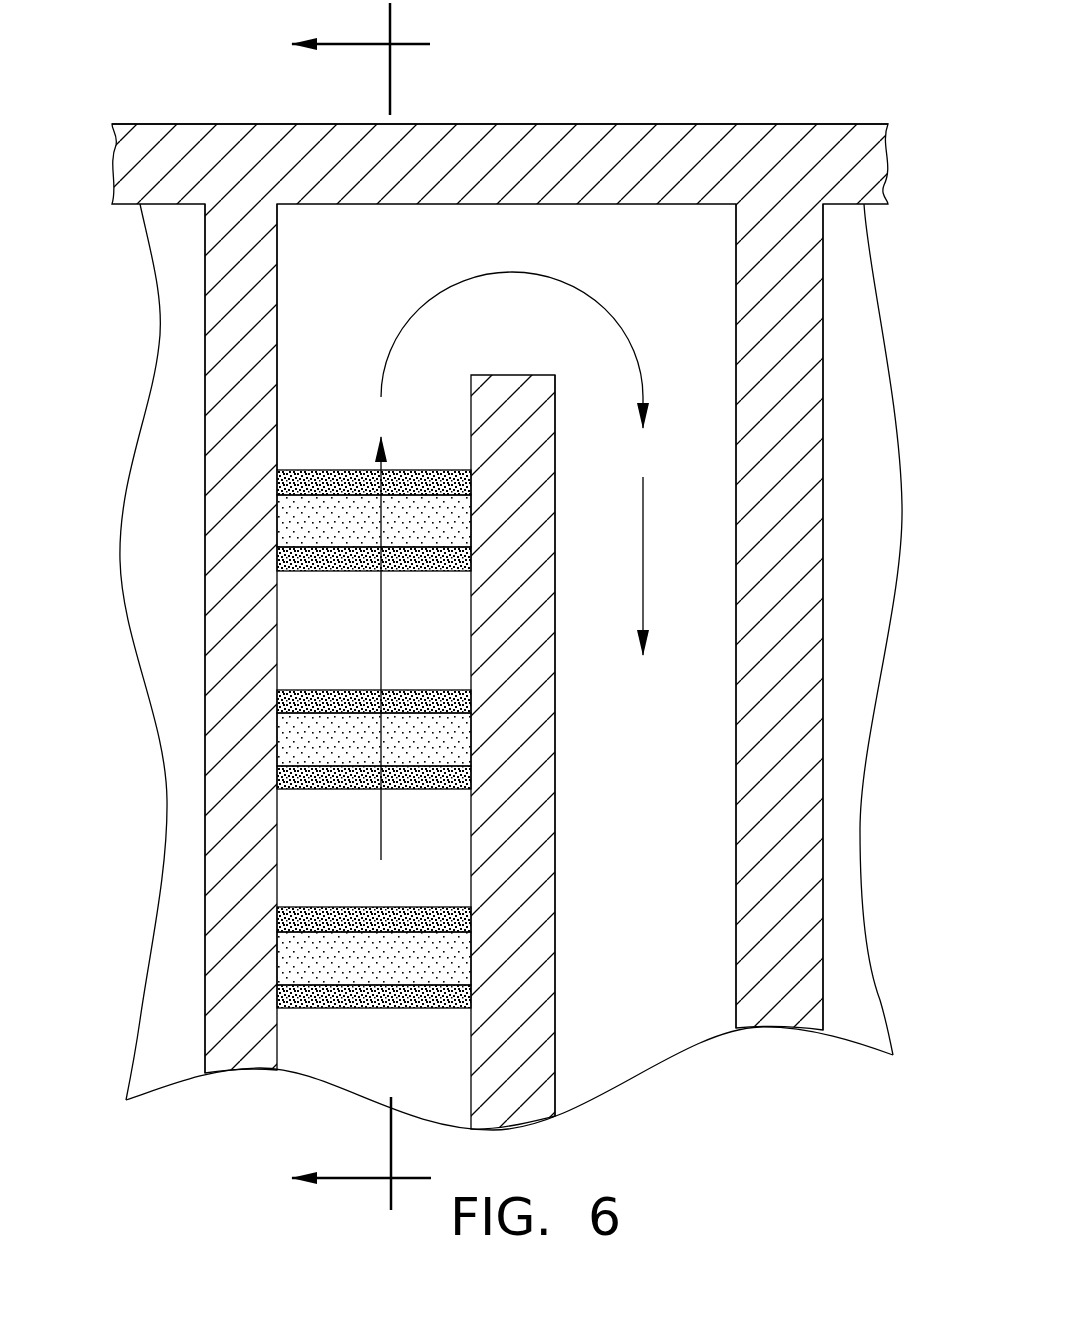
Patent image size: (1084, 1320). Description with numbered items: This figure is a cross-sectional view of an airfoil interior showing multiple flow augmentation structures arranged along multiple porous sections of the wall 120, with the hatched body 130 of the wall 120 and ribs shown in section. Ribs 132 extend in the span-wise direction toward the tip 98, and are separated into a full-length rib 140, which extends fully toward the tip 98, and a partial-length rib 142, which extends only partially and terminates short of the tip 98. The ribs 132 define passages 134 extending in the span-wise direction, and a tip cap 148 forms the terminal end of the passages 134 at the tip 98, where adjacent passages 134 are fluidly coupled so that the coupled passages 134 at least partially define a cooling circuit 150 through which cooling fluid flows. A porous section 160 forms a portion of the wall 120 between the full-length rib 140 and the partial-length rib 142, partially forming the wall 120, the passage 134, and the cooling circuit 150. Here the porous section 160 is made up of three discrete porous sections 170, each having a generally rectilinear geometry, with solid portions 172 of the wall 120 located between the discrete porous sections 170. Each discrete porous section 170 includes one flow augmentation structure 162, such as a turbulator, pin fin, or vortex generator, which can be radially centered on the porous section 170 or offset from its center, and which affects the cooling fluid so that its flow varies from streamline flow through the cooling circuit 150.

The tip 98 is at (498, 615).
The wall 120 is at (362, 1043).
The housing 130 is at (702, 328).
The ribs 132 is at (205, 257).
The passages 134 is at (699, 548).
The full-length ribs 140 is at (592, 266).
The partial-length ribs 142 is at (555, 773).
The tip cap 148 is at (600, 122).
The cooling circuit 150 is at (345, 270).
The porous section 160 is at (255, 712).
The flow augmentation structure 162 is at (288, 526).
The discrete porous sections 170 is at (288, 470).
The solid portions 172 is at (305, 655).